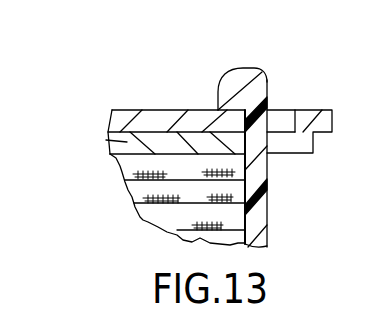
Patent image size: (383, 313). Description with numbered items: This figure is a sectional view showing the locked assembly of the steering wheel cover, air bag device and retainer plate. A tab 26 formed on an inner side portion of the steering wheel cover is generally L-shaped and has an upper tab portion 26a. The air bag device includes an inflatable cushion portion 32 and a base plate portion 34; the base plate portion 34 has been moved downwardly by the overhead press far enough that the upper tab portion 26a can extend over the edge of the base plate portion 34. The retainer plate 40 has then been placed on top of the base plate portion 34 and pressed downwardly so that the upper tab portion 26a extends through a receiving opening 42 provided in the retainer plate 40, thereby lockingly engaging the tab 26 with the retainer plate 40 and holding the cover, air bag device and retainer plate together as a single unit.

The tab 26 is at (265, 212).
The upper tab portion 26a is at (240, 77).
The inflatable cushion portion 32 is at (158, 211).
The base plate portion 34 is at (110, 143).
The retainer plate 40 is at (163, 110).
The receiving opening 42 is at (297, 122).